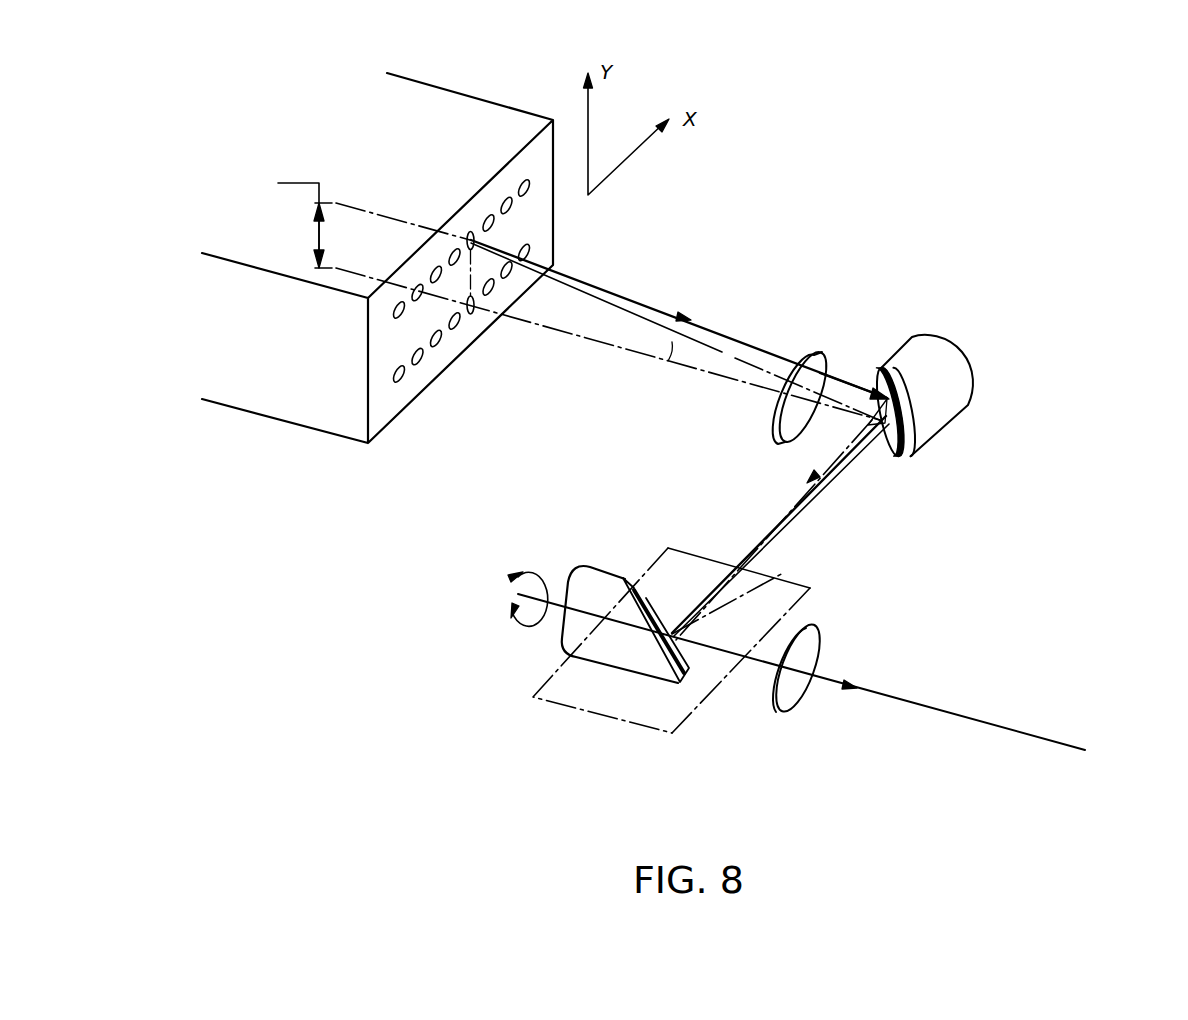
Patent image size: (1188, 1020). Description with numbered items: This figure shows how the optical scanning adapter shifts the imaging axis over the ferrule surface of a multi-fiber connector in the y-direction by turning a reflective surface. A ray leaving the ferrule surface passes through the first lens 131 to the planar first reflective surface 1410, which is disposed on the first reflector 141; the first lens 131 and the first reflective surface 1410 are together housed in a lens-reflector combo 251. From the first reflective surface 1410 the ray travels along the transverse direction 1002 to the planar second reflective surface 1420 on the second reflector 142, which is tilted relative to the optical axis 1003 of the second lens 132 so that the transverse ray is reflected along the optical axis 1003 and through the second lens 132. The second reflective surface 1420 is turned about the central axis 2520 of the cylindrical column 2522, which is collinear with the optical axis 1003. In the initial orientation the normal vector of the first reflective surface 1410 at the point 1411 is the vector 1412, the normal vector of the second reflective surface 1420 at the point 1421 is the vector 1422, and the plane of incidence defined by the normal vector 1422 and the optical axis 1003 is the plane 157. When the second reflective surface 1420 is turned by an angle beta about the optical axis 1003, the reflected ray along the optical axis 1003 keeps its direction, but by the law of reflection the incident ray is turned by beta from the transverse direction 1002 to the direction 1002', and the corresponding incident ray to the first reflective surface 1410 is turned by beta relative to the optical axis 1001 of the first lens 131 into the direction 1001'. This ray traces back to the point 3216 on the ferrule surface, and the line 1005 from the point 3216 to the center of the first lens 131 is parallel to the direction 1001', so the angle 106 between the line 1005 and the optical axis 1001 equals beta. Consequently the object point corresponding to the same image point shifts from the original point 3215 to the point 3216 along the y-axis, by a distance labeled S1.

The point on the ferrule surface 3216 is at (472, 232).
The original object point 3215 is at (474, 315).
The hole spacing S1 is at (374, 212).
The optical axis of the first lens 1001 is at (608, 365).
The line 1005 is at (641, 323).
The angle 106 is at (672, 342).
The direction of the turned incident ray 1001' is at (898, 306).
The first lens 131 is at (805, 350).
The lens-reflector combo 251 is at (947, 388).
The first reflector 141 is at (910, 455).
The first reflective surface 1410 is at (886, 460).
The point on the first reflective surface 1411 is at (876, 468).
The normal vector of the first reflective surface 1412 is at (842, 426).
The transverse direction 1002 is at (834, 530).
The turned incident ray direction 1002' is at (800, 526).
The optical axis of the second lens 1003 is at (900, 698).
The second lens 132 is at (797, 694).
The central axis of the cylindrical column 2520 is at (560, 633).
The cylindrical column 2522 is at (597, 645).
The second reflective surface 1420 is at (647, 630).
The point on the second reflective surface 1421 is at (690, 645).
The normal vector of the second reflective surface 1422 is at (737, 602).
The second reflector 142 is at (650, 725).
The plane of incidence 157 is at (672, 717).